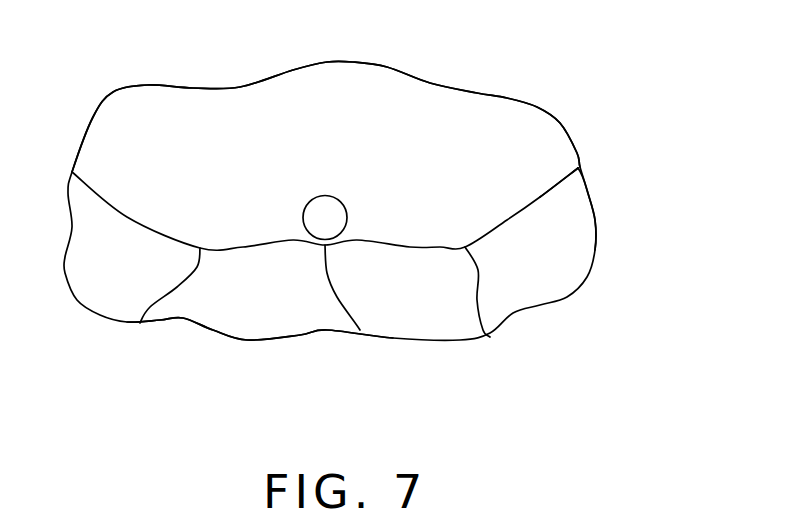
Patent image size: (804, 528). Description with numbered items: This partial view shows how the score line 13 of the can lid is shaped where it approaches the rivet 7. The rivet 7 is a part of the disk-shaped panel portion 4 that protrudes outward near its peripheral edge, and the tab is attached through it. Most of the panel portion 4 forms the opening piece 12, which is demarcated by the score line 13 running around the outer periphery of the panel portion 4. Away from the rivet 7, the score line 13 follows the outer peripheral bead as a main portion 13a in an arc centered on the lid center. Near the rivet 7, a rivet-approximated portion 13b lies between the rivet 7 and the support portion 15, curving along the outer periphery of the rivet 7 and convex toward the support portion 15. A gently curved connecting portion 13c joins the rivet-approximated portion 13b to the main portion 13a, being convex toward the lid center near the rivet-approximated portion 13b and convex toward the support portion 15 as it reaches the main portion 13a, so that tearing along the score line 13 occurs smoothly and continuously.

The panel portion 4 is at (507, 98).
The opening piece 12 is at (192, 103).
The score line 13 is at (140, 323).
The main portion 13a is at (560, 188).
The rivet-approximated portion 13b is at (360, 330).
The connecting portion 13c is at (490, 337).
The rivet 7 is at (327, 200).
The support portion 15 is at (247, 327).